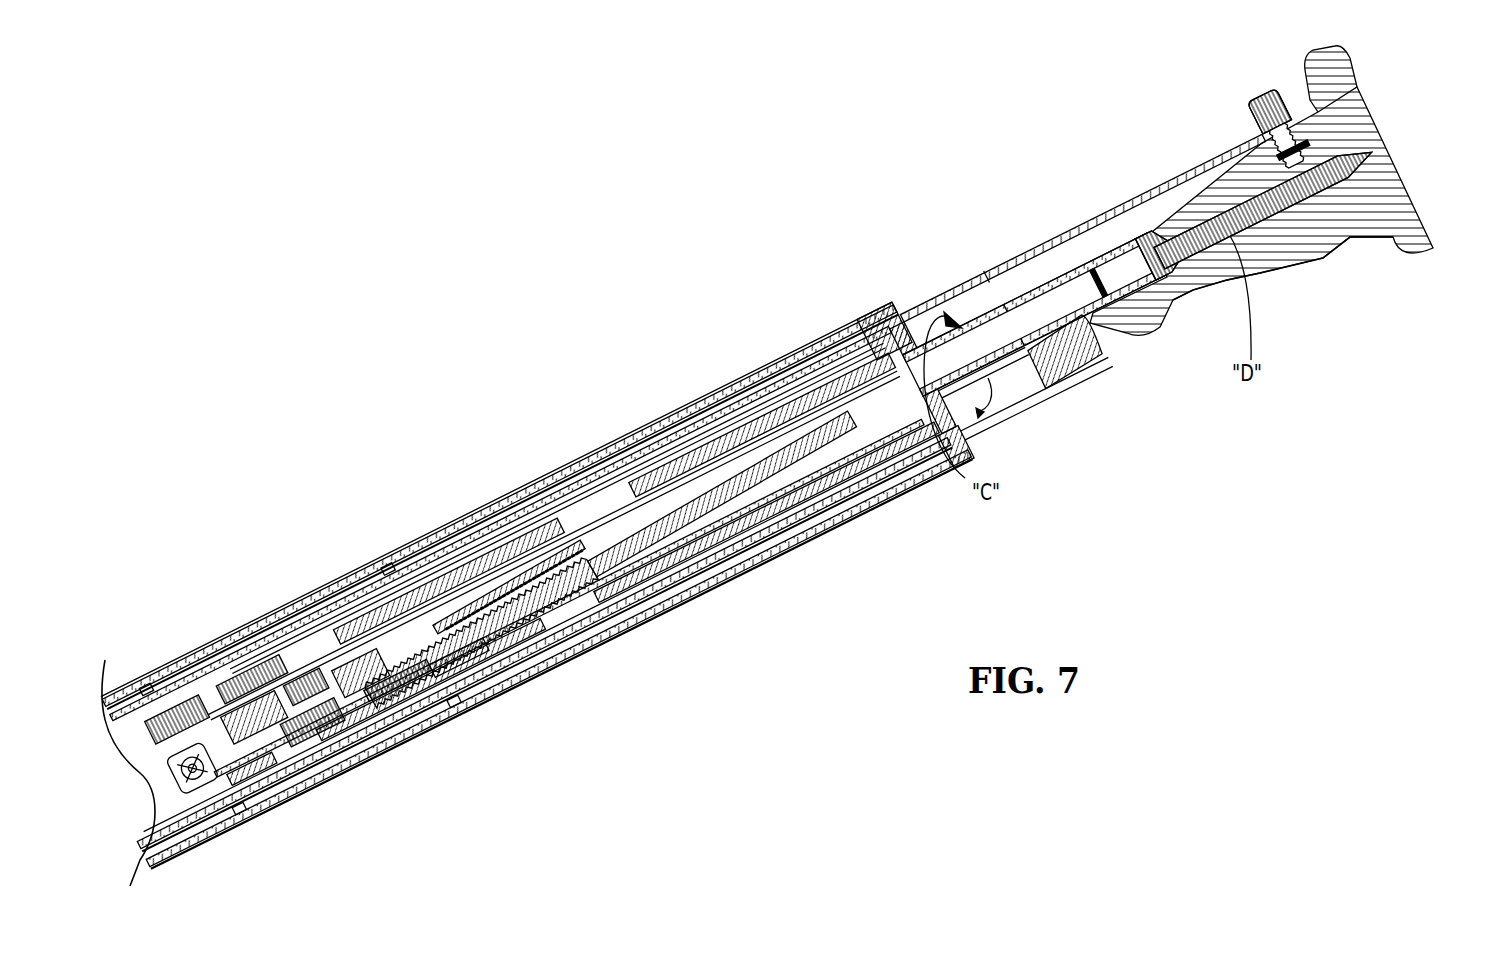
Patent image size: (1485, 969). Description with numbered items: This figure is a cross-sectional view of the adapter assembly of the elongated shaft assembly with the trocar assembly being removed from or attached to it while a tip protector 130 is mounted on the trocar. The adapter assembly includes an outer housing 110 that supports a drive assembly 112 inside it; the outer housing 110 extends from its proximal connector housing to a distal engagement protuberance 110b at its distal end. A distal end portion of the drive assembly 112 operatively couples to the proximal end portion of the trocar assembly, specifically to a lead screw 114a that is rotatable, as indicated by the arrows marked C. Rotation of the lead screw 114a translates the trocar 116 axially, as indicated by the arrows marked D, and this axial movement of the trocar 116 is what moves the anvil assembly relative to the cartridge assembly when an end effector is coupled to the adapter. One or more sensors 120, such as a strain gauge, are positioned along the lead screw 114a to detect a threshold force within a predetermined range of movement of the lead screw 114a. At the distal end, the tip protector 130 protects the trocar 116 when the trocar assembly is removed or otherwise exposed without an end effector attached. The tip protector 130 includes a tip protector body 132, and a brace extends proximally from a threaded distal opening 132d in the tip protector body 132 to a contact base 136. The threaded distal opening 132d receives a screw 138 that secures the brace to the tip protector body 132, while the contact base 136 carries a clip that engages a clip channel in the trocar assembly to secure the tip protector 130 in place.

The outer housing 110 is at (890, 303).
The distal engagement protuberance 110b is at (1052, 393).
The drive assembly 112 is at (200, 775).
The lead screw 114a is at (797, 530).
The trocar 116 is at (1345, 156).
The sensors 120 is at (682, 510).
The tip protector 130 is at (1434, 250).
The tip protector body 132 is at (1306, 264).
The threaded distal opening 132d is at (1302, 166).
The contact base 136 is at (988, 274).
The screw 138 is at (1247, 137).